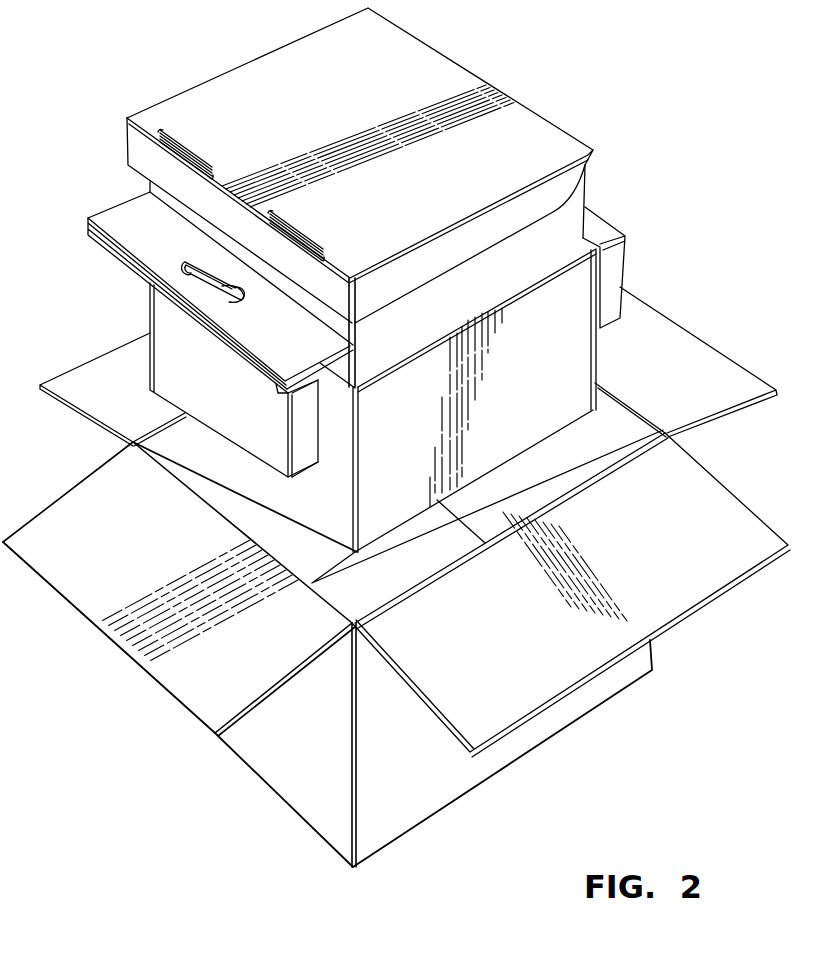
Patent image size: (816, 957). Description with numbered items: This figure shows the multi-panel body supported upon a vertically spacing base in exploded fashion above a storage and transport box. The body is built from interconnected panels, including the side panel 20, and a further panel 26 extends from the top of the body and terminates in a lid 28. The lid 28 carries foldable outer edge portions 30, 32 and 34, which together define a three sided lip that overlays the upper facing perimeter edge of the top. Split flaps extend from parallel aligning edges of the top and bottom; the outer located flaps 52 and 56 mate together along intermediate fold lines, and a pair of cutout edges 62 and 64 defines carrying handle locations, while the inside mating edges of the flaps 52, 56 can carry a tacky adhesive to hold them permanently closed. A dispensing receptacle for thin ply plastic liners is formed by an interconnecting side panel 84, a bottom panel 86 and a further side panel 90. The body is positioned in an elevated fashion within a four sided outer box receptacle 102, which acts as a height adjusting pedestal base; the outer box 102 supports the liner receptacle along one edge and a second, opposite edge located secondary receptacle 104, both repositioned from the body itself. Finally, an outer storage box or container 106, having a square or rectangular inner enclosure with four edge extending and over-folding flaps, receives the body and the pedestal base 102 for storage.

The side panel 20 is at (500, 275).
The further panel 26 is at (390, 165).
The lid 28 is at (310, 100).
The foldable outer edge portion 30 is at (420, 272).
The foldable outer edge portion 32 is at (203, 83).
The foldable outer edge portion 34 is at (223, 228).
The split flap 52 is at (113, 215).
The split flap 56 is at (201, 339).
The cutout edge 62 is at (192, 262).
The cutout edge 64 is at (236, 303).
The side panel 84 is at (217, 393).
The bottom panel 86 is at (305, 467).
The side panel 90 is at (296, 438).
The outer box receptacle 102 is at (530, 391).
The secondary receptacle 104 is at (618, 268).
The outer storage box 106 is at (278, 780).